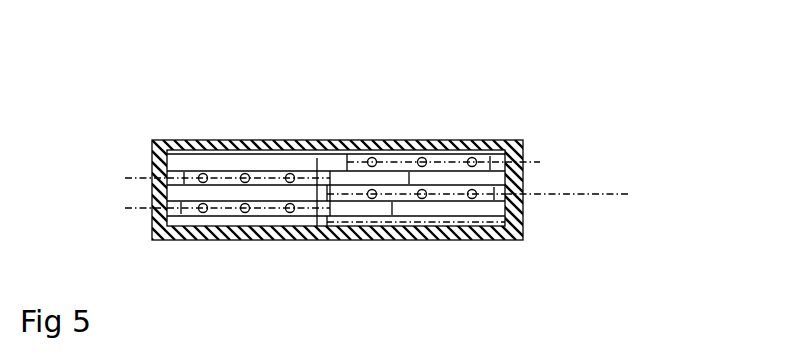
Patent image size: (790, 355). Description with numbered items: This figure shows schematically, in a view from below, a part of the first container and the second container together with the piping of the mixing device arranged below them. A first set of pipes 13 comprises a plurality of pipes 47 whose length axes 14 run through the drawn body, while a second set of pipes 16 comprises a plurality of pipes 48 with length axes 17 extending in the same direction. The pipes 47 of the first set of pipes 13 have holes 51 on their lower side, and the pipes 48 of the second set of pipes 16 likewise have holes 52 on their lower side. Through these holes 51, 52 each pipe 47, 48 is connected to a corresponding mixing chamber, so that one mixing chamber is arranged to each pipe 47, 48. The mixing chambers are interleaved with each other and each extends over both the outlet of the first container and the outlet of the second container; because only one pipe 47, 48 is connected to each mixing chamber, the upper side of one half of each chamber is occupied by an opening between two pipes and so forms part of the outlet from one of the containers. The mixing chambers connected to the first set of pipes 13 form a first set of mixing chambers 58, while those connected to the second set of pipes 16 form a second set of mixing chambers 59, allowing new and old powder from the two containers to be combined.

The first set of pipes 13 is at (220, 221).
The length axes 14 is at (136, 204).
The second set of pipes 16 is at (452, 210).
The length axes 17 is at (528, 194).
The pipes 47 is at (181, 206).
The pipes 48 is at (496, 196).
The holes 51 is at (288, 204).
The holes 52 is at (371, 190).
The first set of mixing chambers 58 is at (409, 180).
The second set of mixing chambers 59 is at (317, 226).